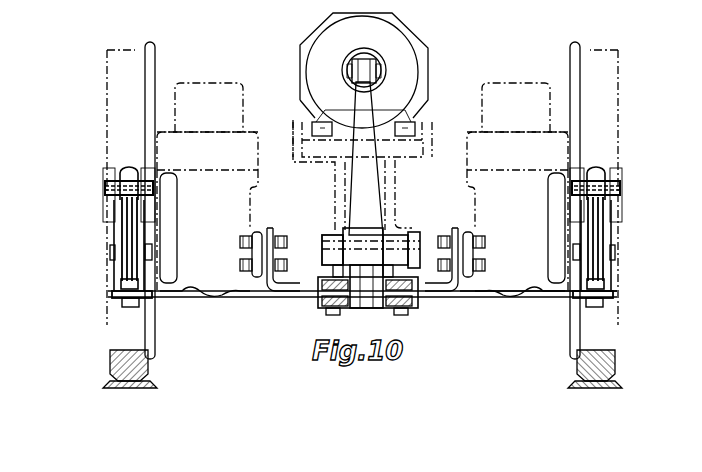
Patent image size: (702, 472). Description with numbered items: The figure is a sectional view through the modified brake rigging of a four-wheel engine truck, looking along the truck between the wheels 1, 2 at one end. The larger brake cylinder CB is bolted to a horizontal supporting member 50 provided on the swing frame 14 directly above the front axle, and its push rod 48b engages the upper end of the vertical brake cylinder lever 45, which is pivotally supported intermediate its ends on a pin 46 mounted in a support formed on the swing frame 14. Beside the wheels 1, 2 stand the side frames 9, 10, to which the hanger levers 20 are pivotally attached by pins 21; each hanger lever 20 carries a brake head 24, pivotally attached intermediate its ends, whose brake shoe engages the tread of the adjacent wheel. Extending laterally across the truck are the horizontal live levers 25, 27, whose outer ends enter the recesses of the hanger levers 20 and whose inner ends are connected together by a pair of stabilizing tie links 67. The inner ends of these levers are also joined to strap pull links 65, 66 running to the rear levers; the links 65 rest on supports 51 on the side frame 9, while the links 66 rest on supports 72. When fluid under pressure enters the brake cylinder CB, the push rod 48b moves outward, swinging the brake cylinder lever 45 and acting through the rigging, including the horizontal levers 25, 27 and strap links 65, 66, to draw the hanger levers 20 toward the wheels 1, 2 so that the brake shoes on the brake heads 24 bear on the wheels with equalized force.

The wheel 1 is at (600, 46).
The wheel 2 is at (133, 48).
The side frame 9 is at (530, 83).
The side frame 10 is at (210, 83).
The swing frame 14 is at (293, 118).
The hanger lever 20 is at (124, 232).
The pin 21 is at (105, 188).
The brake head 24 is at (118, 270).
The horizontal lever 25 is at (484, 298).
The horizontal lever 27 is at (240, 298).
The brake cylinder lever 45 is at (368, 175).
The pin 46 is at (338, 245).
The push rod 48b is at (388, 66).
The horizontal supporting member 50 is at (412, 146).
The support 51 is at (456, 298).
The strap pull link 65 is at (420, 262).
The strap pull link 66 is at (328, 278).
The stabilizing tie link 67 is at (352, 308).
The support 72 is at (300, 298).
The brake cylinder CB is at (425, 40).